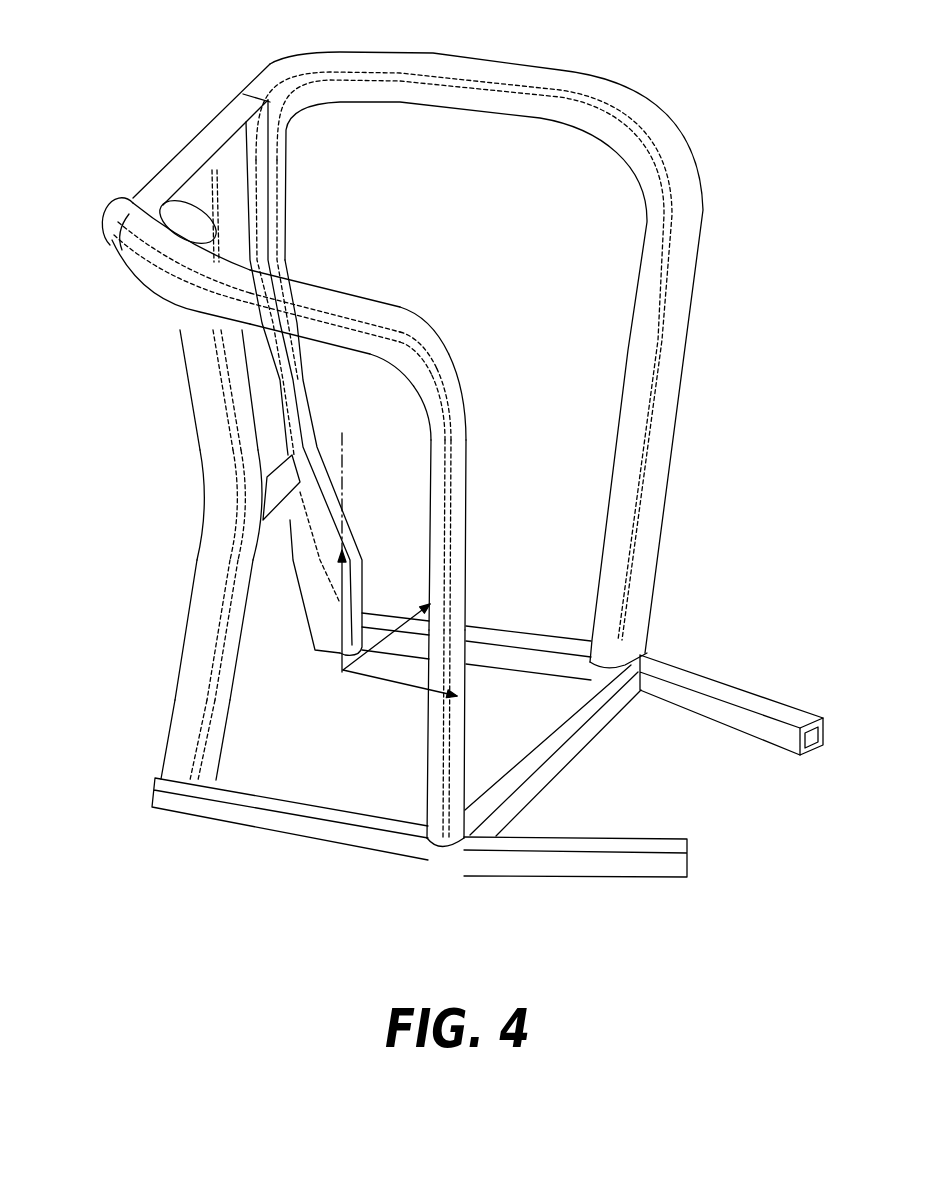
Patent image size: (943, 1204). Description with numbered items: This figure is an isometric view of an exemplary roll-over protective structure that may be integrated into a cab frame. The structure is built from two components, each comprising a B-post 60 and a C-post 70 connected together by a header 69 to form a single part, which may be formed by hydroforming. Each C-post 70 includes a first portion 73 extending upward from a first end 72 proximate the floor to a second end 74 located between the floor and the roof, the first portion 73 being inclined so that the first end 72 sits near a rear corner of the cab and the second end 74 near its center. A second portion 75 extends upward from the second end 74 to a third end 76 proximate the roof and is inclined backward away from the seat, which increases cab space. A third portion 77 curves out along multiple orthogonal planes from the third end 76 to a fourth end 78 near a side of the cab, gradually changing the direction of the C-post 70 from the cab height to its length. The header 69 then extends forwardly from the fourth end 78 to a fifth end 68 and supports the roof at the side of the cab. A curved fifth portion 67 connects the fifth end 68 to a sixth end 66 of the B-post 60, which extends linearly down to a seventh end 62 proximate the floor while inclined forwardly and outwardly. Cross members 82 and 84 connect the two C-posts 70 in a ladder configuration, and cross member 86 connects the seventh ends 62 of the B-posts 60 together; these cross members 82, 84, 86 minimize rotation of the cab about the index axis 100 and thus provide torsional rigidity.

The B-post 60 is at (663, 427).
The seventh end 62 is at (428, 845).
The sixth end 66 is at (460, 430).
The fifth portion 67 is at (440, 367).
The fifth end 68 is at (380, 312).
The header 69 is at (302, 284).
The C-post 70 is at (323, 400).
The first end 72 is at (180, 770).
The first portion 73 is at (195, 655).
The second end 74 is at (228, 505).
The second portion 75 is at (208, 394).
The third end 76 is at (202, 250).
The third portion 77 is at (127, 235).
The fourth end 78 is at (190, 270).
The cross member 82 is at (191, 150).
The cross member 84 is at (280, 487).
The cross member 86 is at (572, 745).
The index axis 100 is at (345, 487).